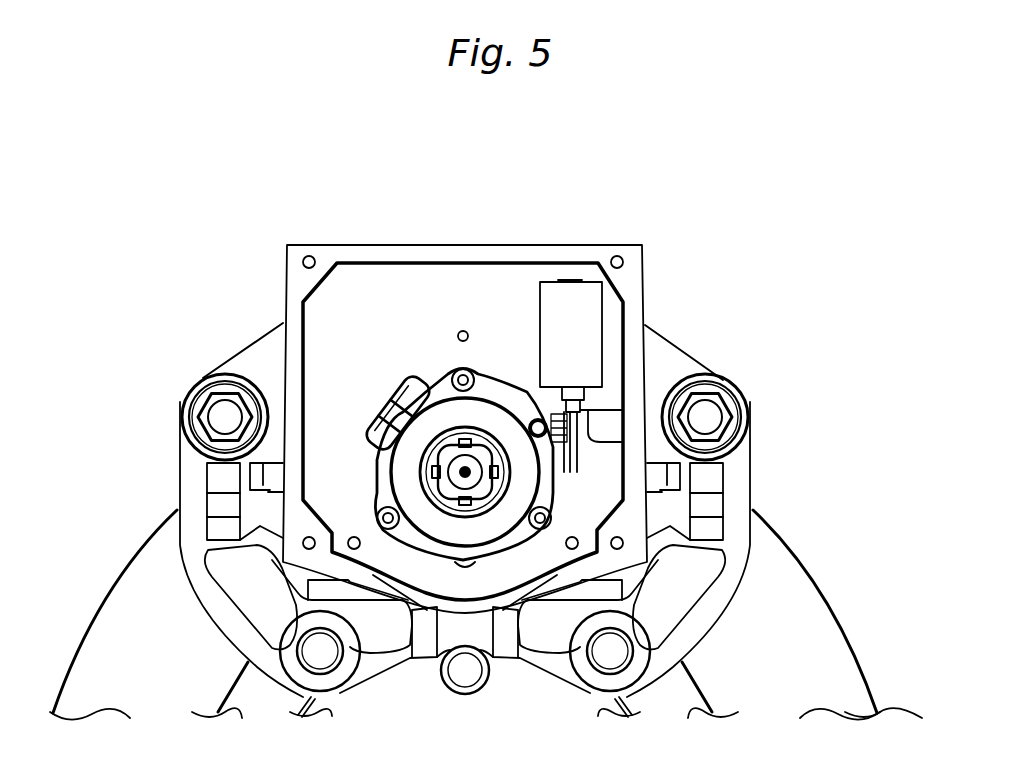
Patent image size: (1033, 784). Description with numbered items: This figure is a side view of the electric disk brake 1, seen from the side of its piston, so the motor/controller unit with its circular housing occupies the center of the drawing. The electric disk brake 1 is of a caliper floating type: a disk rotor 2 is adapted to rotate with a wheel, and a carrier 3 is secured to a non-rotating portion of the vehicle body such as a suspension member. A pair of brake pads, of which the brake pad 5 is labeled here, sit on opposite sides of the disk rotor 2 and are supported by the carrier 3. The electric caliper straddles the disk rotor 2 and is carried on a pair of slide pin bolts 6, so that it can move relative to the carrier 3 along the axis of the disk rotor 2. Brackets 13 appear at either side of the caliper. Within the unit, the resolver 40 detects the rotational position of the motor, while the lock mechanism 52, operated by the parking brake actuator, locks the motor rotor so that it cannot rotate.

The electric disk brake 1 is at (698, 226).
The disk rotor 2 is at (810, 630).
The carrier 3 is at (193, 488).
The brake pad 5 is at (687, 468).
The slide pin bolt 6 is at (220, 415).
The mounting bracket 13 is at (266, 358).
The resolver 40 is at (503, 393).
The lock mechanism 52 is at (590, 297).